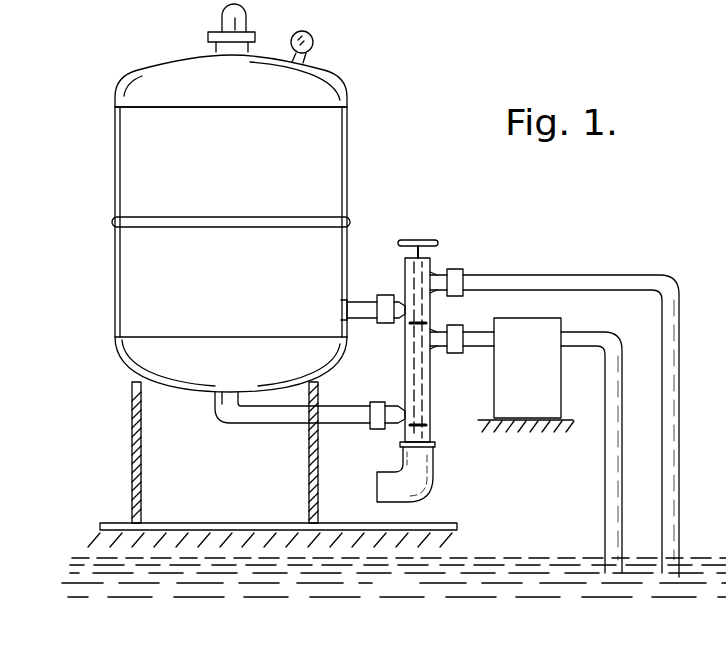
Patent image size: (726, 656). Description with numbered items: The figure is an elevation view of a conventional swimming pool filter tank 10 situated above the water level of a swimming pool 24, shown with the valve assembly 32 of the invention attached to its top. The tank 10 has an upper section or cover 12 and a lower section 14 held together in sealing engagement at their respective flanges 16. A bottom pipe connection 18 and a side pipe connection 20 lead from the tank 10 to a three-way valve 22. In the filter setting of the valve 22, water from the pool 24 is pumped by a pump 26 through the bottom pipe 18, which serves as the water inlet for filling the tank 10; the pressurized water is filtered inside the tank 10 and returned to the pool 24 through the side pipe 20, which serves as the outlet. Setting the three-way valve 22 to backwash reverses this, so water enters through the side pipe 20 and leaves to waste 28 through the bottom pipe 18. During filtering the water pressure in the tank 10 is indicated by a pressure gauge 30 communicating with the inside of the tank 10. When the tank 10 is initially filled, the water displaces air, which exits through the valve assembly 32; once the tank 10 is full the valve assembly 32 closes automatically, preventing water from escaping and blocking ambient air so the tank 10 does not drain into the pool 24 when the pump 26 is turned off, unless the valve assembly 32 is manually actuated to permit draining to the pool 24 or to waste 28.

The swimming pool filter tank 10 is at (256, 275).
The upper section or cover 12 is at (246, 174).
The lower section 14 is at (246, 291).
The flanges 16 is at (113, 226).
The bottom pipe connection 18 is at (341, 406).
The side pipe connection 20 is at (360, 300).
The three-way valve 22 is at (431, 270).
The swimming pool 24 is at (410, 595).
The pump 26 is at (543, 382).
The waste 28 is at (385, 484).
The pressure gauge 30 is at (314, 43).
The valve assembly 32 is at (248, 20).